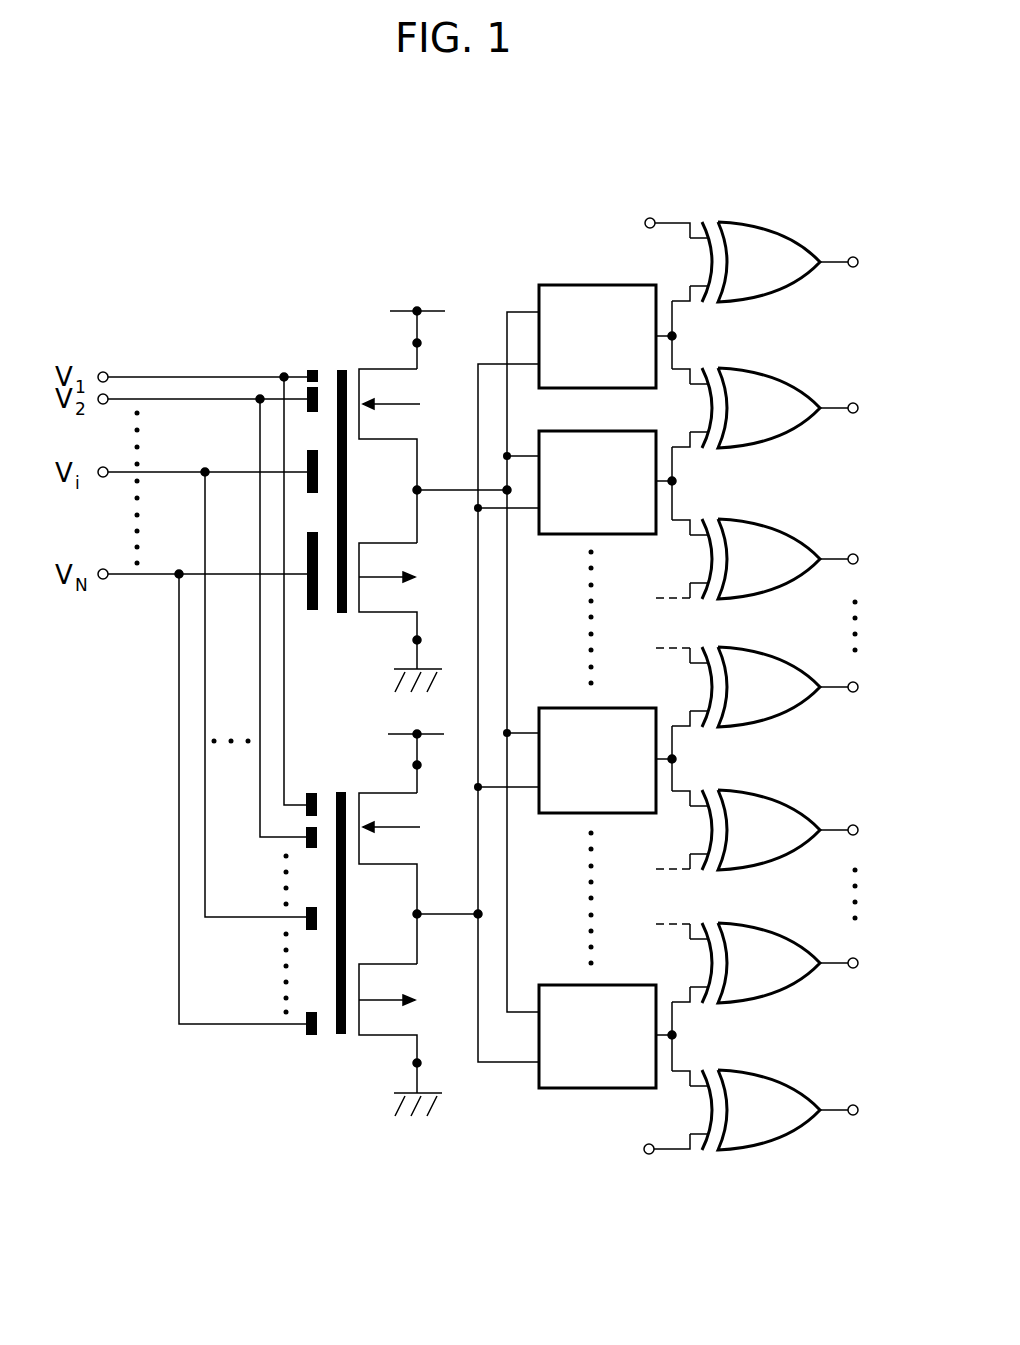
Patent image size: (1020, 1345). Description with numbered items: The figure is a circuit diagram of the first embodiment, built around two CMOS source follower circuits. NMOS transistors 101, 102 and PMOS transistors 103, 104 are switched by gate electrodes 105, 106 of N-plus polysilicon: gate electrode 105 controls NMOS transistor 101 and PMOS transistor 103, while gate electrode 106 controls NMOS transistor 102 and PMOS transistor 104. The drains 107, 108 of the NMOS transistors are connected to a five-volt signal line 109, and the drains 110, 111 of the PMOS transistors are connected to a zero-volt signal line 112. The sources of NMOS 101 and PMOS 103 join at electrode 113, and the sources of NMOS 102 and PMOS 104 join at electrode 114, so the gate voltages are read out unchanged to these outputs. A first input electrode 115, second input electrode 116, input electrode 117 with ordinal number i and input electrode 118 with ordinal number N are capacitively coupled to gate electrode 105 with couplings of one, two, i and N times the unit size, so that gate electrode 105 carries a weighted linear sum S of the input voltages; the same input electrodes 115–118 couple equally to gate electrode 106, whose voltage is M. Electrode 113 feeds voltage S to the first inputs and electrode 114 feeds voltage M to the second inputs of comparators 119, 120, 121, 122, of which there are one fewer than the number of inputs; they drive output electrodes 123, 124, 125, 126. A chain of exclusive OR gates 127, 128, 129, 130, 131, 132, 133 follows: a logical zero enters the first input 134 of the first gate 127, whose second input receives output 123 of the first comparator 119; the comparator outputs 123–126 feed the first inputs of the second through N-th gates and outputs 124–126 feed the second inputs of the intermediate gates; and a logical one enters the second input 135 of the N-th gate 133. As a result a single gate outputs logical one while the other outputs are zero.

The NMOS transistor 101 is at (416, 456).
The NMOS transistor 102 is at (416, 878).
The PMOS transistor 103 is at (416, 606).
The PMOS transistor 104 is at (416, 1028).
The gate electrode 105 is at (341, 368).
The gate electrode 106 is at (338, 791).
The drain 107 is at (420, 343).
The drain 108 is at (416, 765).
The 5 V signal line 109 is at (417, 310).
The drain 110 is at (416, 640).
The drain 111 is at (416, 1063).
The 0 V signal line 112 is at (444, 1102).
The electrode 113 is at (449, 483).
The electrode 114 is at (459, 906).
The first input electrode 115 is at (177, 375).
The second input electrode 116 is at (225, 401).
The input electrode with ordinal number i 117 is at (232, 475).
The input electrode with ordinal number N 118 is at (179, 571).
The comparator 119 is at (557, 284).
The comparator 120 is at (560, 536).
The comparator 121 is at (553, 707).
The comparator 122 is at (550, 984).
The output electrode 123 is at (676, 336).
The output electrode 124 is at (676, 481).
The output electrode 125 is at (676, 759).
The output electrode 126 is at (676, 1035).
The exclusive OR gate 127 is at (772, 228).
The exclusive OR gate 128 is at (772, 374).
The exclusive OR gate 129 is at (772, 525).
The exclusive OR gate 130 is at (797, 639).
The exclusive OR gate 131 is at (772, 796).
The exclusive OR gate 132 is at (760, 924).
The exclusive OR gate 133 is at (772, 1071).
The first input of the first gate 134 is at (651, 217).
The second input of the Nth gate 135 is at (656, 1156).